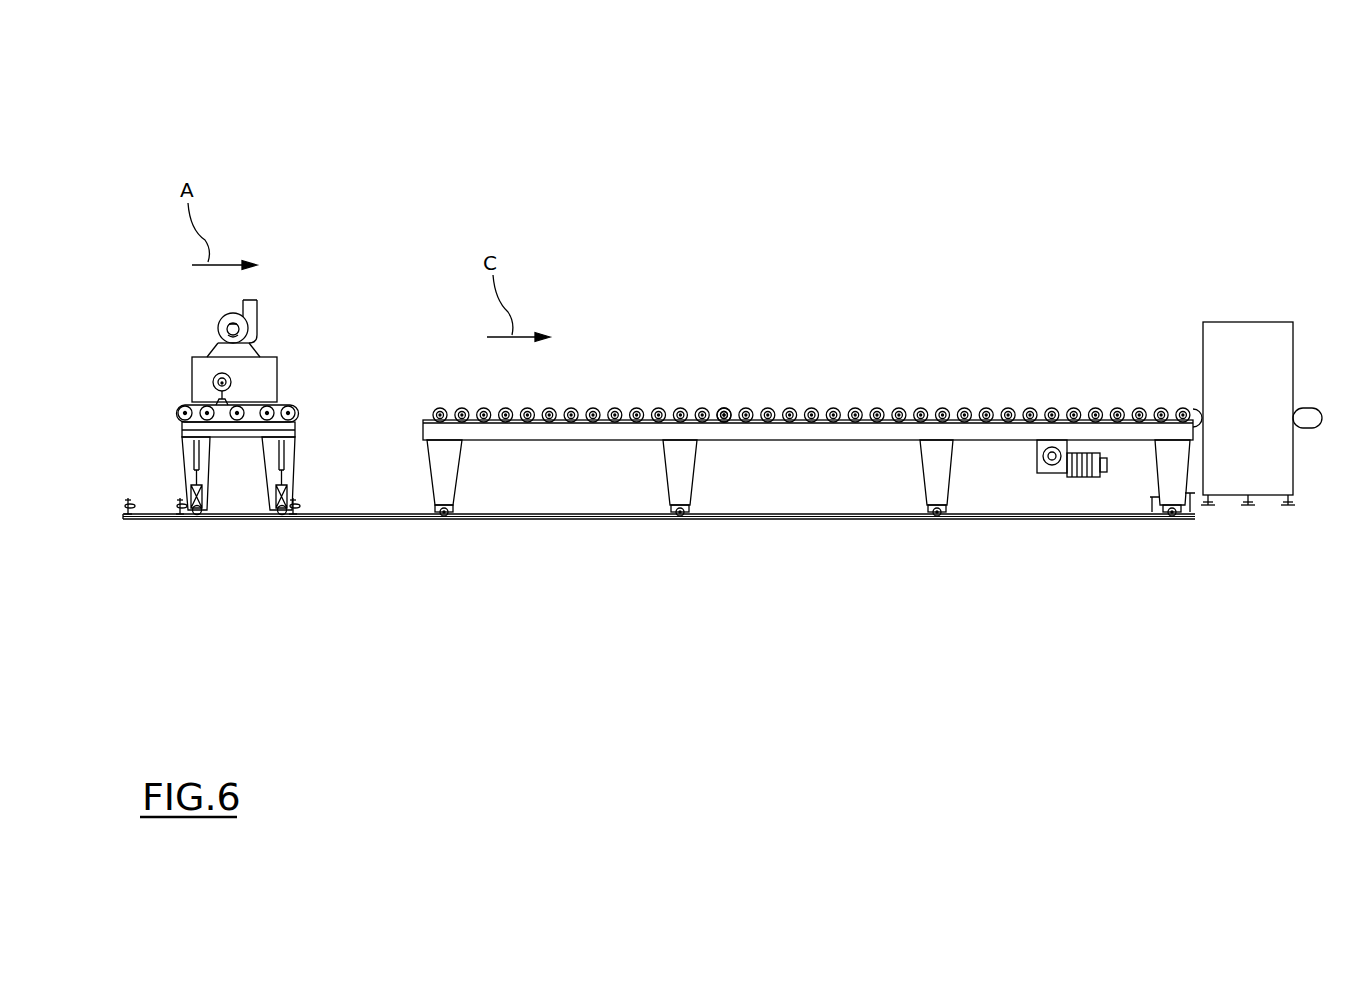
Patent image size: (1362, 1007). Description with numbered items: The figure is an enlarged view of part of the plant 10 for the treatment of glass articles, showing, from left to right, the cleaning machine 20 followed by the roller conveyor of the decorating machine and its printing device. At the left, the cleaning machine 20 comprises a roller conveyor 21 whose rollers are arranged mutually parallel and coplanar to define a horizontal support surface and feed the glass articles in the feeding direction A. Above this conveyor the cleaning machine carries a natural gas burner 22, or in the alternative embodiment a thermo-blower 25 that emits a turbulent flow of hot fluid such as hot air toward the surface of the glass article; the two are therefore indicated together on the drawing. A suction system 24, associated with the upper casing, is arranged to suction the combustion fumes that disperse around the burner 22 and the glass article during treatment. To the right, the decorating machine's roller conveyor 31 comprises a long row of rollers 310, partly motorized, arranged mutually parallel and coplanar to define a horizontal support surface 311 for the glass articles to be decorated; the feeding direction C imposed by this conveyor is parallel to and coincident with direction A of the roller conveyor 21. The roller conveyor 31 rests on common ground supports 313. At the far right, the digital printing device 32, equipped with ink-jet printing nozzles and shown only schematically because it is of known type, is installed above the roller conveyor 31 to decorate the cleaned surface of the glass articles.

The plant 10 is at (212, 134).
The cleaning machine 20 is at (240, 321).
The roller conveyor 21 is at (182, 428).
The natural gas burner 22 is at (171, 339).
The thermo-blower 25 is at (213, 380).
The suction system 24 is at (258, 322).
The roller conveyor 31 is at (773, 445).
The rollers 310 is at (788, 418).
The horizontal support surface 311 is at (722, 408).
The common ground supports 313 is at (445, 470).
The printing device 32 is at (1247, 335).